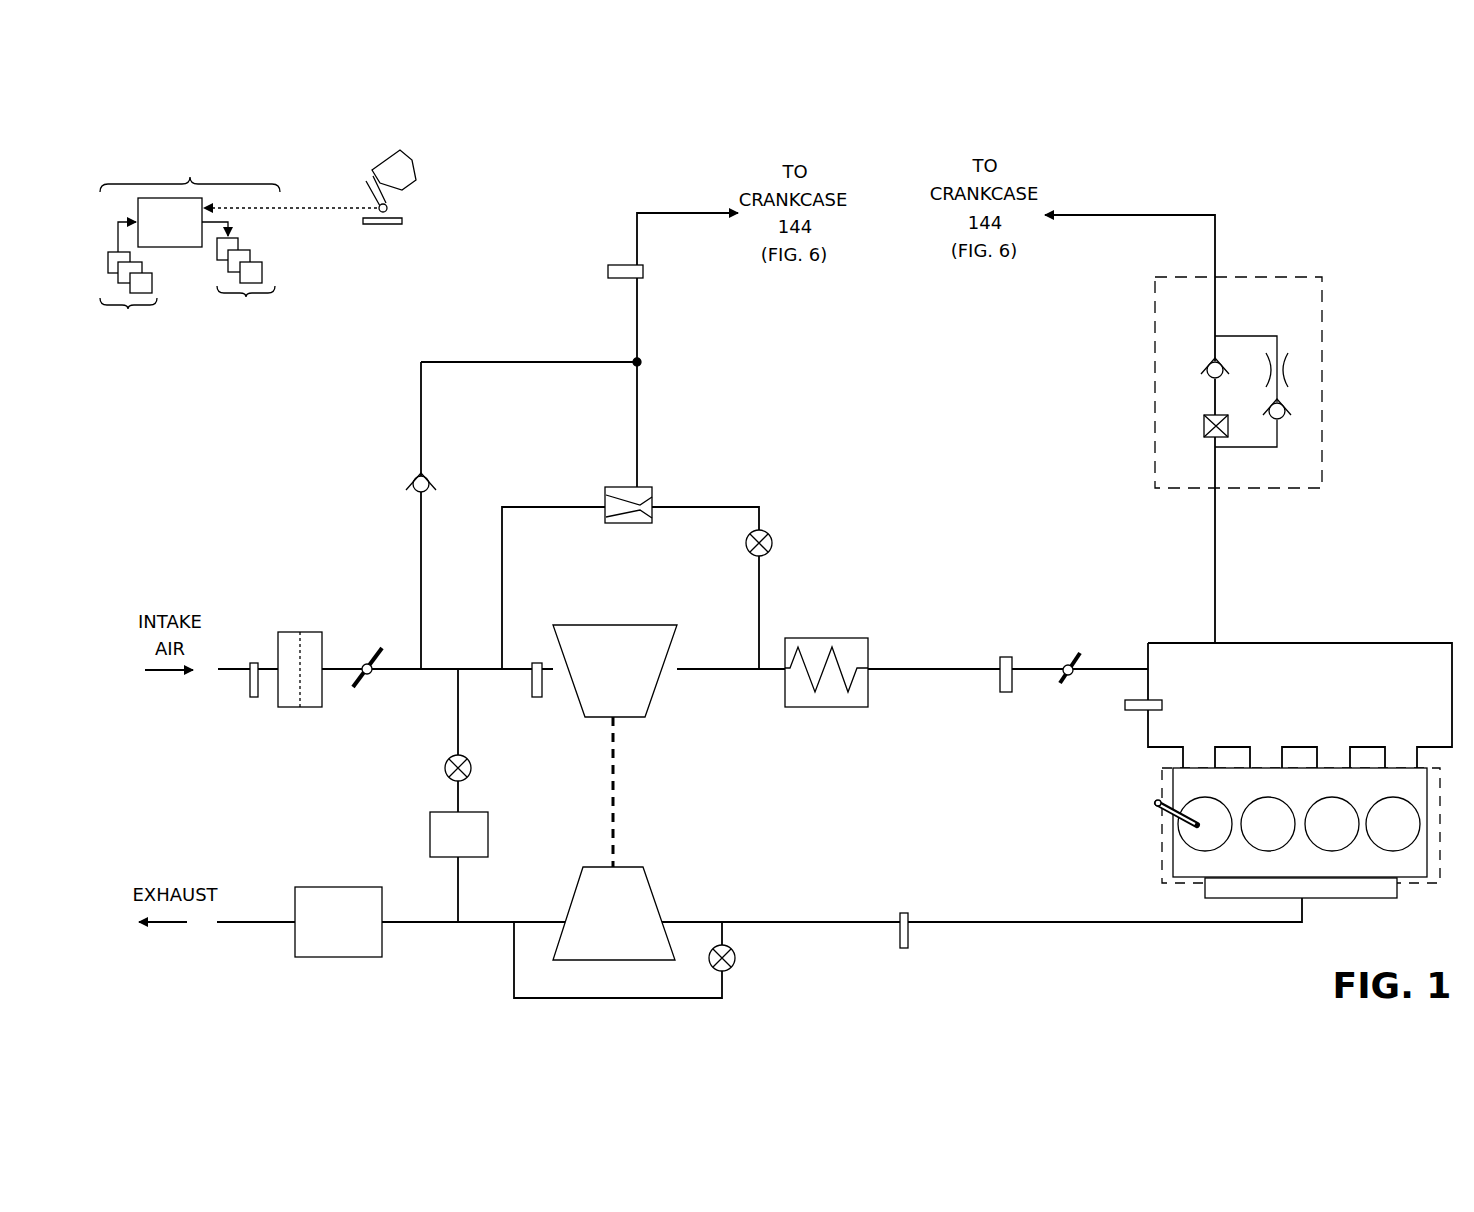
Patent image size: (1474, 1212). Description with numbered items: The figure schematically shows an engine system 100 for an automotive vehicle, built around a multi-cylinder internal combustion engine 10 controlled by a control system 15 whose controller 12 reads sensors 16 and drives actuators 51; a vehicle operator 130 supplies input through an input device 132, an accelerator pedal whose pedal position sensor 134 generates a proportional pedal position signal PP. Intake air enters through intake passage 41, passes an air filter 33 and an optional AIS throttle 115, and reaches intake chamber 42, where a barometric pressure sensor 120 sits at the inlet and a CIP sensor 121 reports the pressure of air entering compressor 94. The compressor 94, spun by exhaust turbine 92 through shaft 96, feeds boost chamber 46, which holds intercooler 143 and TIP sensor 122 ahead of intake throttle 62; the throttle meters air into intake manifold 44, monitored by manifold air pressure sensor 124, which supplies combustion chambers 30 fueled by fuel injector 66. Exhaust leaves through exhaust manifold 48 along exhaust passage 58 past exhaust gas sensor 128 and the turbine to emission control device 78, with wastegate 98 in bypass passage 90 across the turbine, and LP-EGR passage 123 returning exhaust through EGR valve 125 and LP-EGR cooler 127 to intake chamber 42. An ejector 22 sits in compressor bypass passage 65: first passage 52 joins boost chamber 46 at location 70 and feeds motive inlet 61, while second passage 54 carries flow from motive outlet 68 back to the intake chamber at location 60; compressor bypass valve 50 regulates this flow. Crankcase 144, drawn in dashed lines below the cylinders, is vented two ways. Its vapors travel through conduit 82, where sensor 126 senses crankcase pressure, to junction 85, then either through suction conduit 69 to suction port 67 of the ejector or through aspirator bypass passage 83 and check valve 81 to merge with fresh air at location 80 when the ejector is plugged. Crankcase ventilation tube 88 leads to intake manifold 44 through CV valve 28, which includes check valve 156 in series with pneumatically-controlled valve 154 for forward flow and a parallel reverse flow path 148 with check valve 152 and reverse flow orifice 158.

The internal combustion engine 10 is at (1405, 582).
The engine system 100 is at (1403, 172).
The controller 12 is at (257, 222).
The control system 15 is at (190, 160).
The sensors 16 is at (133, 290).
The actuators 51 is at (246, 282).
The vehicle operator 130 is at (413, 173).
The input device 132 is at (363, 190).
The pedal position sensor 134 is at (397, 210).
The pedal position signal PP is at (294, 210).
The ejector 22 is at (605, 488).
The crankcase ventilation valve 28 is at (1303, 272).
The combustion chambers 30 is at (1422, 835).
The air filter 33 is at (302, 708).
The intake passage 41 is at (267, 670).
The intake chamber 42 is at (440, 673).
The intake manifold 44 is at (1291, 704).
The boost chamber 46 is at (710, 668).
The exhaust manifold 48 is at (1348, 893).
The compressor bypass valve 50 is at (772, 540).
The first passage 52 is at (737, 507).
The second passage 54 is at (515, 507).
The exhaust passage 58 is at (1005, 925).
The location 60 is at (488, 661).
The motive inlet 61 is at (656, 514).
The intake throttle 62 is at (1067, 687).
The compressor bypass passage 65 is at (527, 478).
The fuel injector 66 is at (1162, 800).
The suction port 67 is at (644, 481).
The motive outlet 68 is at (602, 514).
The suction conduit 69 is at (636, 440).
The location 70 is at (757, 681).
The emission control device 78 is at (328, 933).
The location 80 is at (414, 658).
The check valve 81 is at (411, 478).
The conduit 82 is at (653, 212).
The aspirator bypass passage 83 is at (493, 362).
The junction 85 is at (650, 362).
The crankcase ventilation tube 88 is at (1153, 214).
The bypass passage 90 is at (513, 957).
The exhaust turbine 92 is at (603, 924).
The compressor 94 is at (603, 676).
The shaft 96 is at (615, 785).
The wastegate 98 is at (733, 950).
The air induction system throttle 115 is at (353, 687).
The barometric pressure sensor 120 is at (253, 698).
The compressor inlet pressure sensor 121 is at (537, 697).
The throttle inlet pressure sensor 122 is at (1007, 693).
The LP-EGR passage 123 is at (460, 880).
The manifold air pressure sensor 124 is at (1132, 712).
The EGR valve 125 is at (473, 763).
The crankcase pressure sensor 126 is at (608, 265).
The LP-EGR cooler 127 is at (444, 846).
The exhaust gas sensor 128 is at (905, 950).
The intercooler 143 is at (855, 638).
The crankcase 144 is at (1437, 883).
The reverse flow path 148 is at (1279, 341).
The check valve 152 is at (1287, 420).
The pneumatically-controlled valve 154 is at (1204, 426).
The check valve 156 is at (1208, 356).
The reverse flow orifice 158 is at (1286, 363).